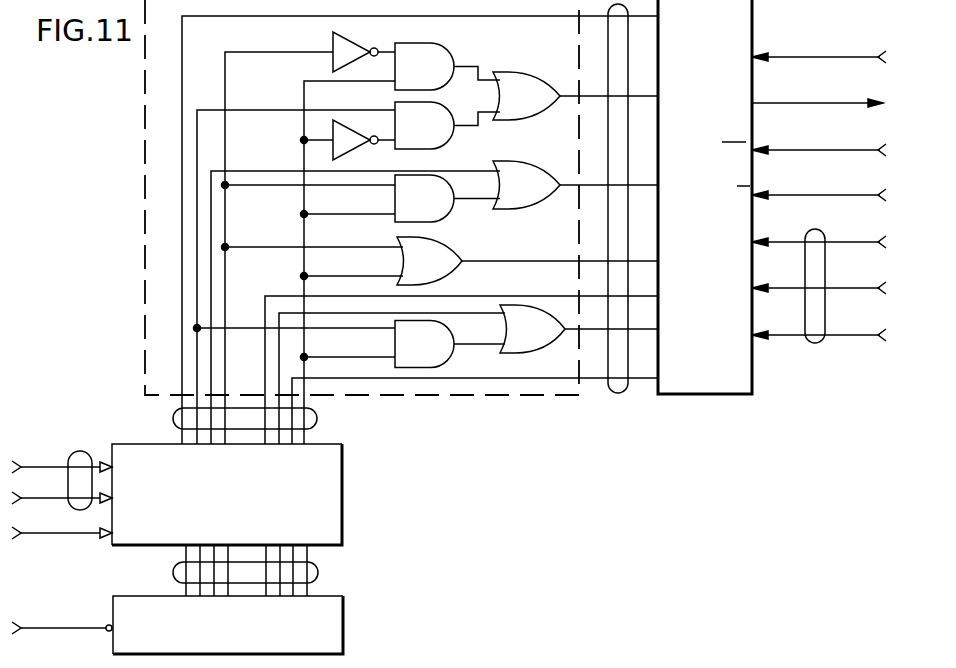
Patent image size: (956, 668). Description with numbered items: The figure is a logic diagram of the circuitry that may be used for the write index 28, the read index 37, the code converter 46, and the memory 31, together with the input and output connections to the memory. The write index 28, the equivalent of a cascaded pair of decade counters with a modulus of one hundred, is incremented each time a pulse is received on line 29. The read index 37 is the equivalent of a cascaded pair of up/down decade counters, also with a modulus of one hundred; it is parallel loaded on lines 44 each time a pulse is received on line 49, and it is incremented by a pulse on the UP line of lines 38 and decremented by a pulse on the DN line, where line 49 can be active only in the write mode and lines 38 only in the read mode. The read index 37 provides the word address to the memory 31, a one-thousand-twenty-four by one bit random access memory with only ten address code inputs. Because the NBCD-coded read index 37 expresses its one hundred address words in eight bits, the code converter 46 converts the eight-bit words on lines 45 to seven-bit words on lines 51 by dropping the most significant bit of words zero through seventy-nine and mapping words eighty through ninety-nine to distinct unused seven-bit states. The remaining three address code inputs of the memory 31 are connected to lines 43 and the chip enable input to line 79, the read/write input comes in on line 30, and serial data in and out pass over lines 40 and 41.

The write index 28 is at (353, 612).
The line 29 is at (76, 628).
The line 30 is at (837, 195).
The memory 31 is at (720, 395).
The read index 37 is at (342, 493).
The lines 38 is at (80, 450).
The line 40 is at (833, 57).
The line 41 is at (831, 103).
The lines 43 is at (817, 343).
The lines 44 is at (318, 572).
The lines 45 is at (317, 419).
The code converter 46 is at (500, 395).
The line 49 is at (50, 533).
The lines 51 is at (622, 393).
The line 79 is at (829, 150).